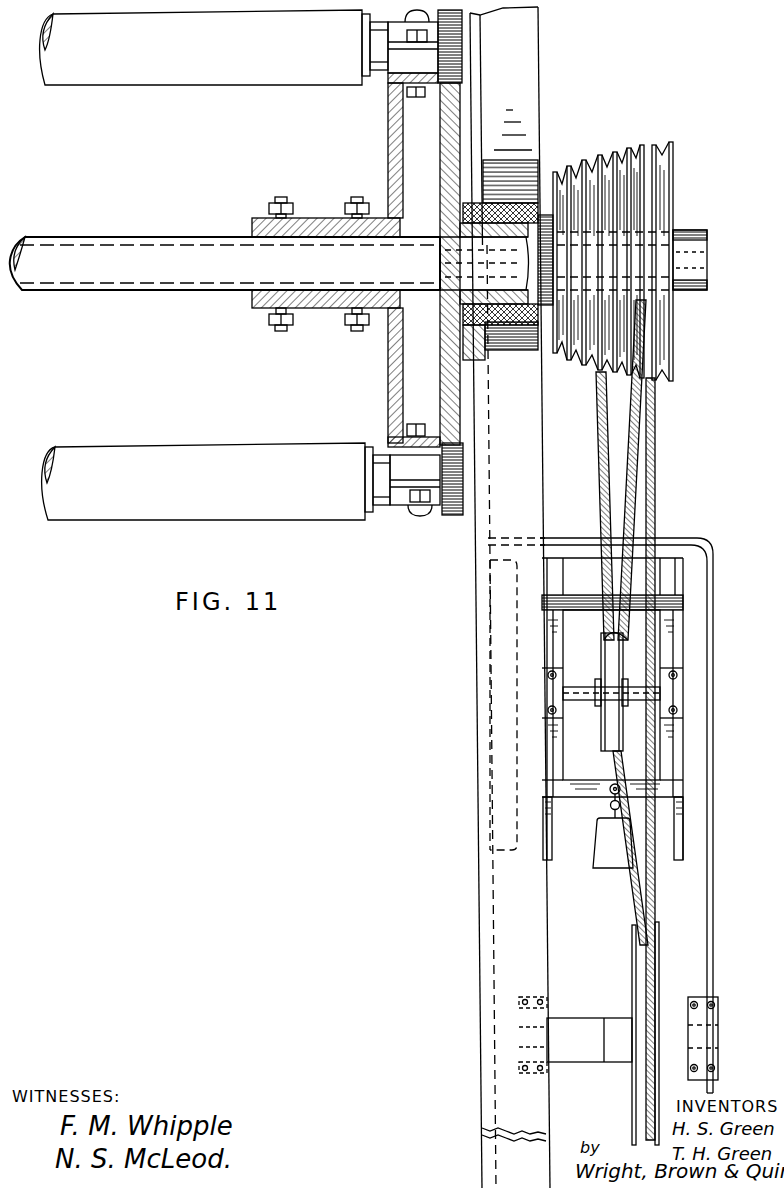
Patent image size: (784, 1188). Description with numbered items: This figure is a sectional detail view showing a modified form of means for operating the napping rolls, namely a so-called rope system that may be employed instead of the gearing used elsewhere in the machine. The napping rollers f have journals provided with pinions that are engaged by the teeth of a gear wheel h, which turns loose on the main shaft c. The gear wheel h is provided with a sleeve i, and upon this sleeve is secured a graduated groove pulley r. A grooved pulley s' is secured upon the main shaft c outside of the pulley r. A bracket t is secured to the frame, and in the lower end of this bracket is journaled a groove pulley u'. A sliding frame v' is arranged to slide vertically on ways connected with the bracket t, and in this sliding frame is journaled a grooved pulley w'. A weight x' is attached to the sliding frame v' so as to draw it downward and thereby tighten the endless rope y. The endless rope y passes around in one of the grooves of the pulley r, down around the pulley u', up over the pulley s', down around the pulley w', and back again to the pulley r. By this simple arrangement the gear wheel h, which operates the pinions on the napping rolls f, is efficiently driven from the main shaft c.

The napping roller f is at (240, 265).
The main shaft c is at (162, 252).
The gear wheel h is at (460, 415).
The sleeve i is at (513, 325).
The graduated groove pulley r is at (551, 597).
The grooved pulley s' is at (633, 261).
The bracket t is at (713, 702).
The grooved pulley w' is at (597, 692).
The sliding frame v' is at (612, 709).
The weight x' is at (613, 826).
The endless rope y is at (650, 893).
The groove pulley u' is at (632, 1033).